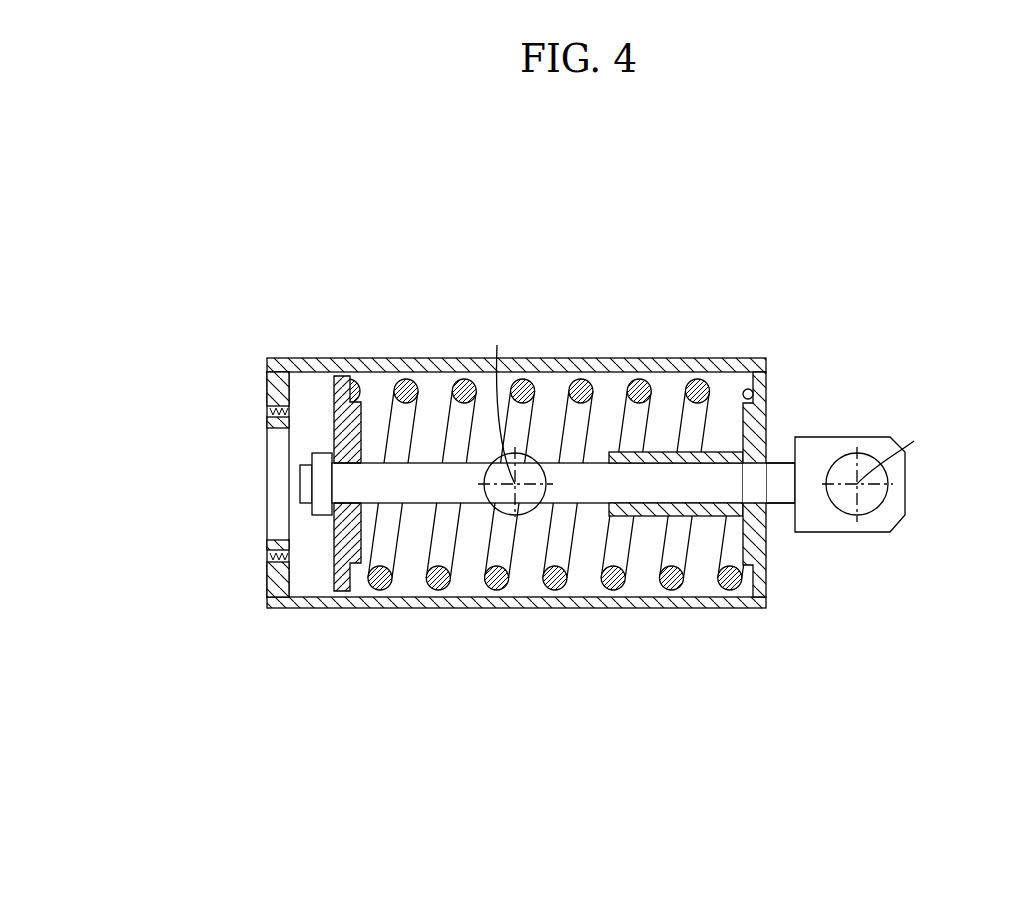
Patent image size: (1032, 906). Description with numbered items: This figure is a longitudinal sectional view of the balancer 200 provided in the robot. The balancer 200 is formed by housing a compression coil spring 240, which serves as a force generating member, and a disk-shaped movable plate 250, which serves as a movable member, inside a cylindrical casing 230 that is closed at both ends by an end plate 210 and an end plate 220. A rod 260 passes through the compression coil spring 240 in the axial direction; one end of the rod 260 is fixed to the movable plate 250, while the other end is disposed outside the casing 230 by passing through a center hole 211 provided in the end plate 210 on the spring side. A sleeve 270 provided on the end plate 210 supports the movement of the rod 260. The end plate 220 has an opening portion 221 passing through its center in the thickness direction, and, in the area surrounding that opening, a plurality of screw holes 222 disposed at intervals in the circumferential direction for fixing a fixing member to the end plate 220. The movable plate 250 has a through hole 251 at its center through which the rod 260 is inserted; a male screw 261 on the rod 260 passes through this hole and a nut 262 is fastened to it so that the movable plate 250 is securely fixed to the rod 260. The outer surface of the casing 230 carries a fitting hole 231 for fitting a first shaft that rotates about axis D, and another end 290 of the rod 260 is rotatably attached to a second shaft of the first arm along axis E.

The balancer 200 is at (322, 256).
The end plate 210 is at (766, 385).
The center hole 211 is at (765, 492).
The end plate 220 is at (267, 383).
The opening portion 221 is at (277, 543).
The screw holes 222 is at (270, 410).
The casing 230 is at (372, 344).
The fitting hole 231 is at (533, 470).
The compression coil spring 240 is at (512, 557).
The movable plate 250 is at (336, 568).
The through hole 251 is at (357, 492).
The rod 260 is at (427, 462).
The male screw 261 is at (300, 485).
The nut 262 is at (316, 453).
The sleeve 270 is at (645, 517).
The another end of the rod 290 is at (905, 484).